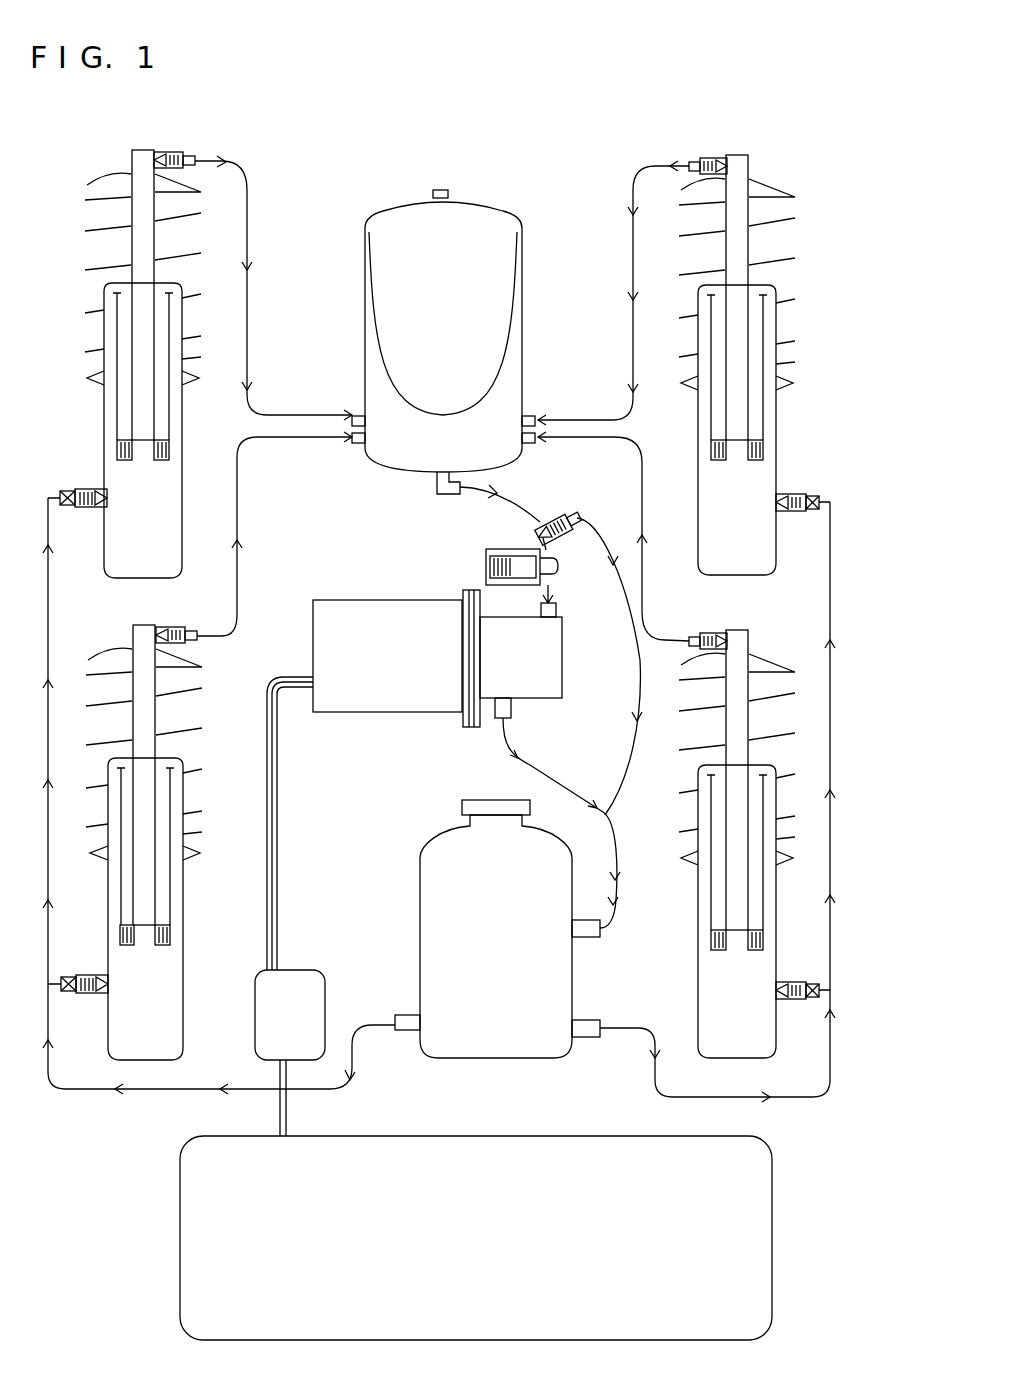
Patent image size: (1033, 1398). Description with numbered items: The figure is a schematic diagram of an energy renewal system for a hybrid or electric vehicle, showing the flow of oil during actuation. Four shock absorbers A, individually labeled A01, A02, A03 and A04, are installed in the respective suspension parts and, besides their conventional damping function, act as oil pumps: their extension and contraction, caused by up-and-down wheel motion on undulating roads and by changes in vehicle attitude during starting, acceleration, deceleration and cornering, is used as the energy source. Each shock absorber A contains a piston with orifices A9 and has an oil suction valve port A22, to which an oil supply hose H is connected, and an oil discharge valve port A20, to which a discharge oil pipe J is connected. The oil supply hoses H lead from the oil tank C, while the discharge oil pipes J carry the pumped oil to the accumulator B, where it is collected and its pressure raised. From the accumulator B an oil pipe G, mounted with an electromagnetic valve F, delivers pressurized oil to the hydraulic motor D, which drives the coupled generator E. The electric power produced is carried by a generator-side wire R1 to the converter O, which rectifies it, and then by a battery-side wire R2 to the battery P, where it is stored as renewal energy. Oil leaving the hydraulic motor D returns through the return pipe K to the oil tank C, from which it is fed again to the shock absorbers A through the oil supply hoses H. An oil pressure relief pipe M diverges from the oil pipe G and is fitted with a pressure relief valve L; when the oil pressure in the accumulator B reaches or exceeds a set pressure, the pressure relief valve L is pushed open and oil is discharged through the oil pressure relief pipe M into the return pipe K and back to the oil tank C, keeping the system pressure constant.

The shock absorber A is at (188, 520).
The shock absorber A01 is at (184, 878).
The shock absorber A02 is at (183, 426).
The shock absorber A03 is at (698, 832).
The shock absorber A04 is at (698, 428).
The orifices A9 is at (160, 462).
The oil discharge valve port A20 is at (196, 156).
The oil suction valve port A22 is at (60, 490).
The accumulator B is at (520, 213).
The oil tank C is at (420, 887).
The hydraulic motor D is at (563, 678).
The generator E is at (360, 600).
The electromagnetic valve F is at (560, 572).
The oil pipe G is at (505, 497).
The oil supply hose H is at (49, 548).
The discharge oil pipe J is at (246, 182).
The return pipe K is at (540, 762).
The pressure relief valve L is at (543, 517).
The oil pressure relief pipe M is at (598, 536).
The converter O is at (298, 970).
The battery P is at (572, 1136).
The generator-side wire R1 is at (280, 795).
The battery-side wire R2 is at (288, 1104).